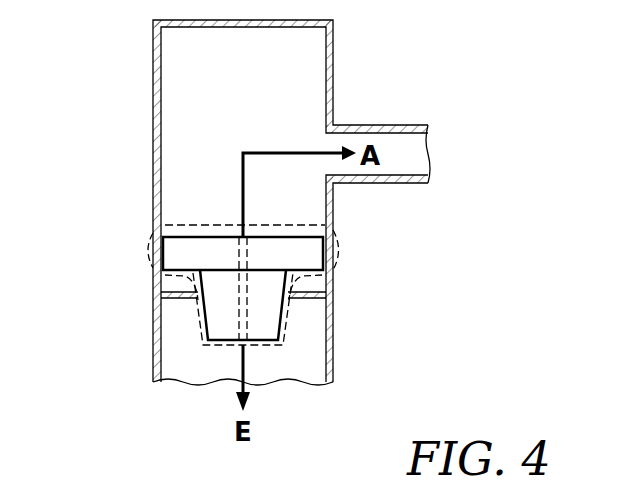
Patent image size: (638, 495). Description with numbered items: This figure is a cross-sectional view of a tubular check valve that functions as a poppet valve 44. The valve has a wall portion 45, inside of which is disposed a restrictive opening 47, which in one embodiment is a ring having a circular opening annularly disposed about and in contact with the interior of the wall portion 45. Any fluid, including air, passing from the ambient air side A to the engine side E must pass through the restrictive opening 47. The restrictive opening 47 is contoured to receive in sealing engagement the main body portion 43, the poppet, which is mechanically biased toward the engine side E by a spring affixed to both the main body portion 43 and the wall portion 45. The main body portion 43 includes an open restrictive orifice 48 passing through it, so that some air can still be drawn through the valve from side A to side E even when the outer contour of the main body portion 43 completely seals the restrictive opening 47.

The wall portion 45 is at (156, 117).
The main body portion 43 is at (180, 252).
The poppet valve 44 is at (340, 263).
The restrictive opening 47 is at (196, 297).
The open restrictive orifice 48 is at (250, 293).